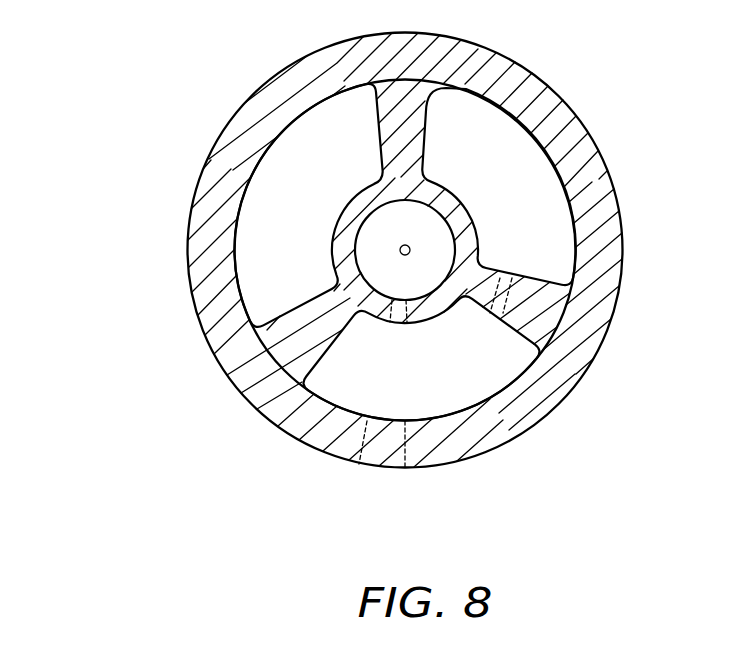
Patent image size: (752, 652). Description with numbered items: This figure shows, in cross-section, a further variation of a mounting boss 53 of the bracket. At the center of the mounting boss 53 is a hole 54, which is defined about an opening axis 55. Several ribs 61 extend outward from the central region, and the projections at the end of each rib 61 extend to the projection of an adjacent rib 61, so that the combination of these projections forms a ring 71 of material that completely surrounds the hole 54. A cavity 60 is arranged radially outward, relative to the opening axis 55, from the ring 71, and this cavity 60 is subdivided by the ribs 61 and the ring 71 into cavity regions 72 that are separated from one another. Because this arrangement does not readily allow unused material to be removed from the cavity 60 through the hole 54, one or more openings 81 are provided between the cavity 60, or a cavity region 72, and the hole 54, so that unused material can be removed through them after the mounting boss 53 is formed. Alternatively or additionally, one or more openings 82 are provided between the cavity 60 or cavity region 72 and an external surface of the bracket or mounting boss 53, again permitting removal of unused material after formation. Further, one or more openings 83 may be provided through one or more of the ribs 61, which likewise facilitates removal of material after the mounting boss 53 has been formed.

The mounting boss 53 is at (192, 293).
The hole 54 is at (447, 203).
The opening axis 55 is at (405, 255).
The cavity 60 is at (247, 182).
The rib 61 is at (267, 370).
The ring 71 is at (353, 215).
The cavity region 72 is at (228, 337).
The opening 81 is at (397, 320).
The opening 82 is at (383, 467).
The opening 83 is at (505, 280).